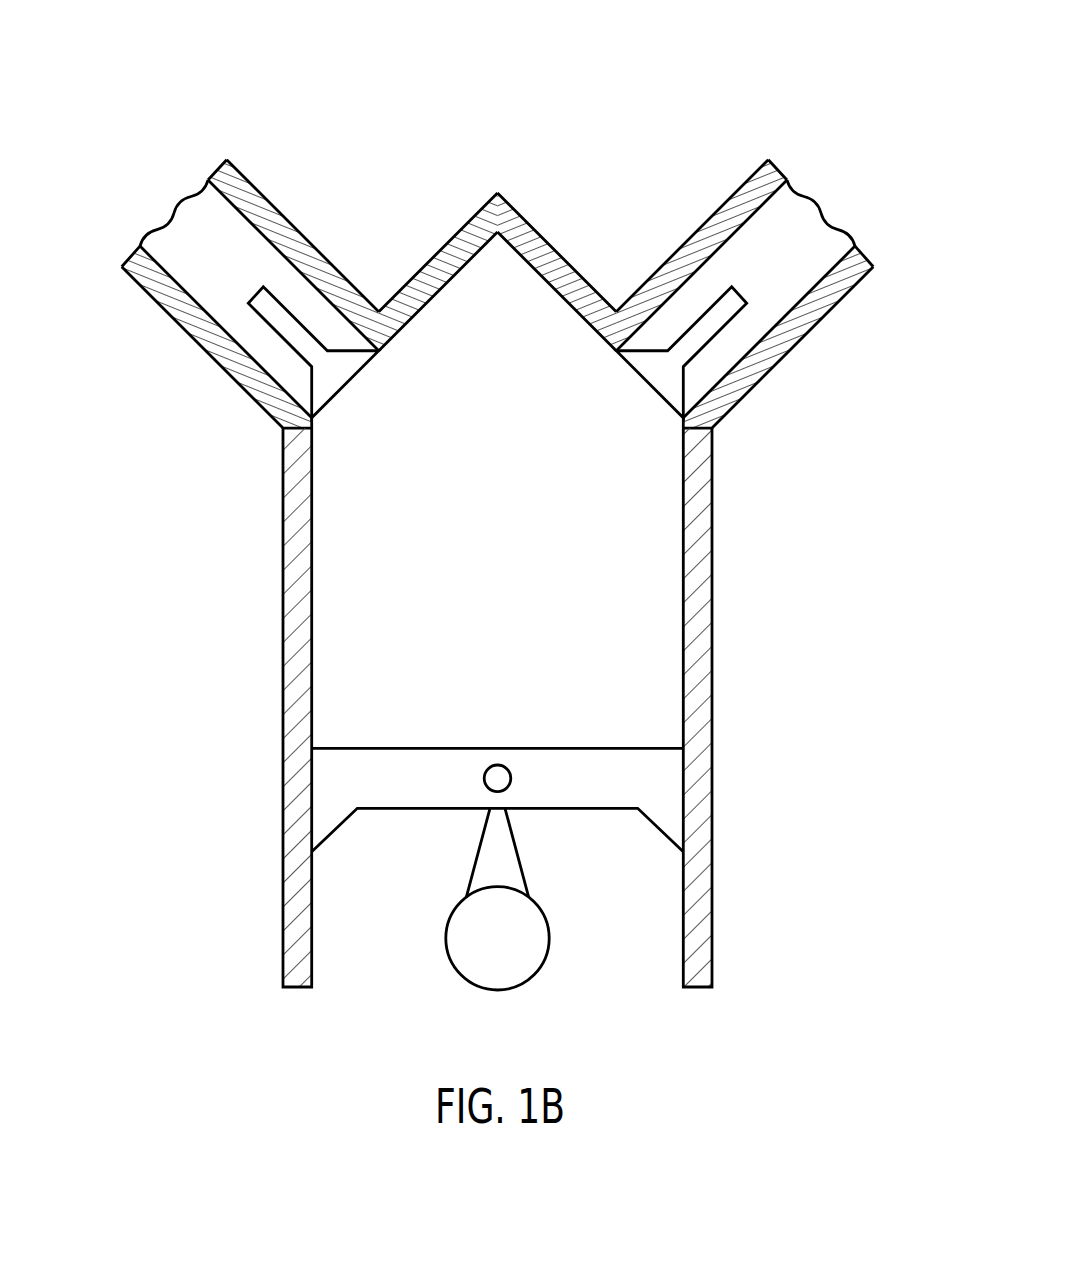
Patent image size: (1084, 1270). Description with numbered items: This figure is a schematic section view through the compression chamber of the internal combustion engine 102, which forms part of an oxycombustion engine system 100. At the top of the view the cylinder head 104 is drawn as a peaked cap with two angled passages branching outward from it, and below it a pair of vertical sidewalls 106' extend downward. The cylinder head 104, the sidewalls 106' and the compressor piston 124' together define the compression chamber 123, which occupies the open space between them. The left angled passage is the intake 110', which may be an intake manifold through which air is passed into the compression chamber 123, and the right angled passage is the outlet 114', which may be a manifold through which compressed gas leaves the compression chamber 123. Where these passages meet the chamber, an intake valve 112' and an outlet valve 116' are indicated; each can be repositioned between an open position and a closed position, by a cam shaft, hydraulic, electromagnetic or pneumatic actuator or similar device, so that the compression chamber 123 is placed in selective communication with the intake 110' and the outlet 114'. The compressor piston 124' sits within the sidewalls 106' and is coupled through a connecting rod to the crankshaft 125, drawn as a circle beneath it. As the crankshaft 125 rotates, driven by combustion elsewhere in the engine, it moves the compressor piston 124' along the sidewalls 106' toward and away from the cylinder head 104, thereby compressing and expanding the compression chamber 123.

The oxycombustion engine system 100 is at (695, 108).
The internal combustion engine 102 is at (582, 185).
The cylinder head 104 is at (415, 228).
The sidewalls 106' is at (455, 702).
The intake 110' is at (244, 294).
The intake valve 112' is at (314, 368).
The outlet 114' is at (752, 294).
The outlet valve 116' is at (679, 368).
The compression chamber 123 is at (519, 591).
The compressor piston 124' is at (498, 834).
The crankshaft 125 is at (477, 958).